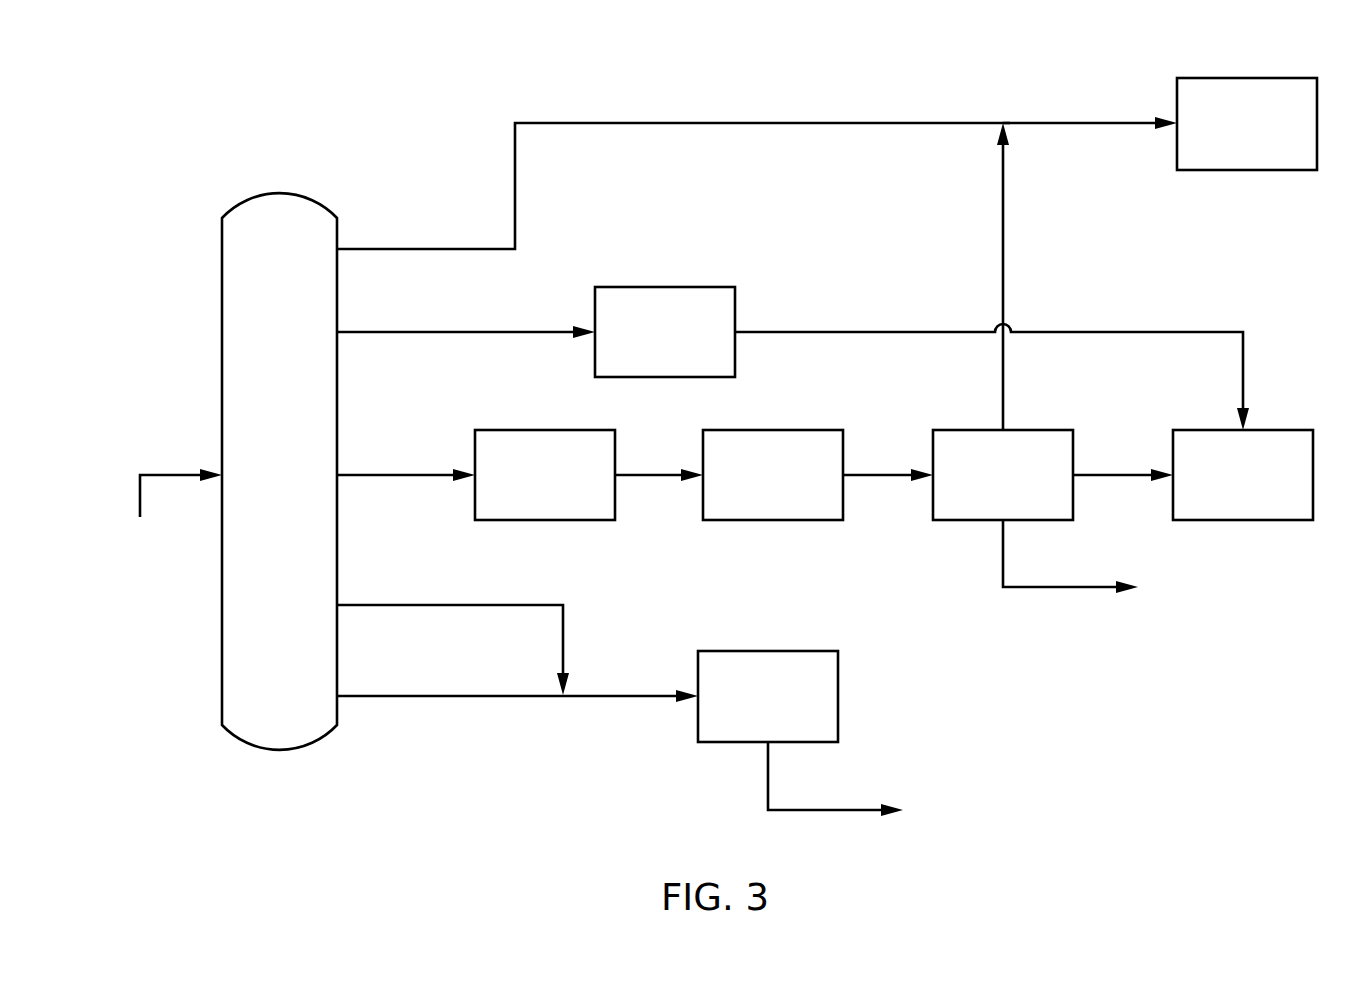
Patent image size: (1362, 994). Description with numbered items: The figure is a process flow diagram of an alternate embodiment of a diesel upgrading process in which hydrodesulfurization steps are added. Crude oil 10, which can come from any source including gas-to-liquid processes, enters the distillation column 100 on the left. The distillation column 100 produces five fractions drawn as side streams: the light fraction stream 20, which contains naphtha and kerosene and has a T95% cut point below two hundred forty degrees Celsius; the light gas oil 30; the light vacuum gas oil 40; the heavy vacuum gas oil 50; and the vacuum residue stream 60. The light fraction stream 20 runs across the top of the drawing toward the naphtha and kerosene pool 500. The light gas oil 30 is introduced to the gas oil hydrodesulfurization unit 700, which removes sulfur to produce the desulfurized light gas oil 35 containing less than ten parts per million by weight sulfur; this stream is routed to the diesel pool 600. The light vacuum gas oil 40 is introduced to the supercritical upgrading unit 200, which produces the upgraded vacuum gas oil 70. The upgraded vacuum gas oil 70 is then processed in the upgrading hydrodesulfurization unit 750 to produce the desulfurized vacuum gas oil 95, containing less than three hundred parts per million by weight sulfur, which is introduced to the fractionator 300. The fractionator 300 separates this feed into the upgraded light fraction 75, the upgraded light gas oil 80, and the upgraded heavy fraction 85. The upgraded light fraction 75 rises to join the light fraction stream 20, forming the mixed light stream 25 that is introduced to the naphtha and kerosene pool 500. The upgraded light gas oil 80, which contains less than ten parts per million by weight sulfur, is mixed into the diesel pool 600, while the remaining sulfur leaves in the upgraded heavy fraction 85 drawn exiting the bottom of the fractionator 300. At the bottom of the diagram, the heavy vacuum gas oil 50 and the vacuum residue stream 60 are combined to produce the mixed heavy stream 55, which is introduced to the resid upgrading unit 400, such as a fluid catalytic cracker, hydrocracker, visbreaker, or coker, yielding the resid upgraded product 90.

The distillation column 100 is at (257, 489).
The supercritical upgrading unit 200 is at (522, 489).
The fractionator 300 is at (980, 489).
The resid upgrading unit 400 is at (745, 711).
The naphtha and kerosene pool 500 is at (1224, 137).
The diesel pool 600 is at (1220, 489).
The gas oil hydrodesulfurization unit 700 is at (642, 346).
The upgrading hydrodesulfurization unit 750 is at (750, 489).
The crude oil 10 is at (168, 475).
The light fraction stream 20 is at (358, 249).
The mixed light stream 25 is at (1053, 123).
The light gas oil 30 is at (360, 332).
The desulfurized light gas oil 35 is at (1067, 332).
The light vacuum gas oil 40 is at (358, 475).
The heavy vacuum gas oil 50 is at (358, 605).
The mixed heavy stream 55 is at (632, 696).
The vacuum residue stream 60 is at (360, 696).
The upgraded vacuum gas oil 70 is at (653, 477).
The upgraded light fraction 75 is at (1003, 198).
The upgraded light gas oil 80 is at (1107, 472).
The upgraded heavy fraction 85 is at (1078, 590).
The resid upgraded product 90 is at (832, 810).
The desulfurized vacuum gas oil 95 is at (875, 473).